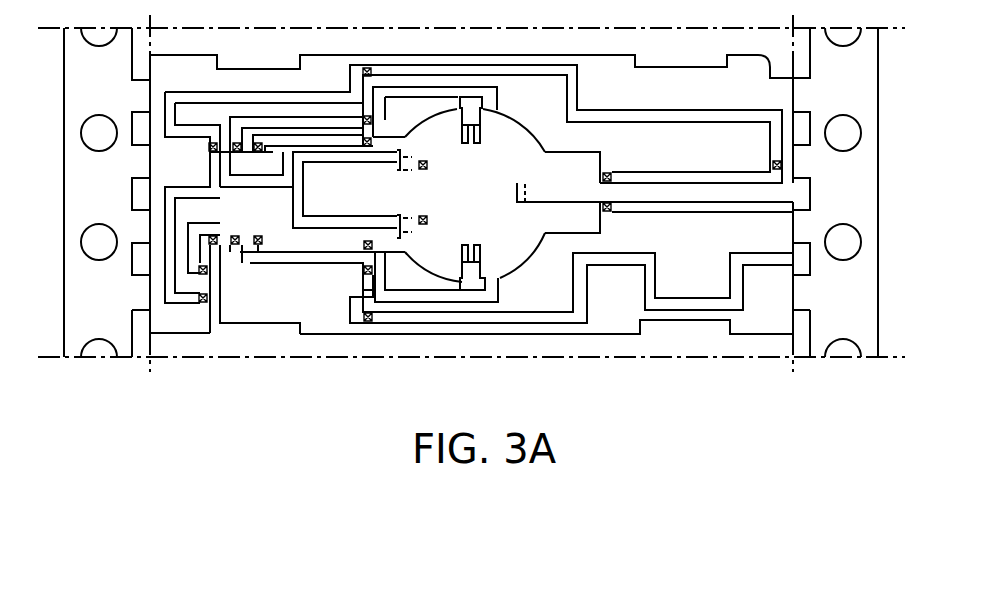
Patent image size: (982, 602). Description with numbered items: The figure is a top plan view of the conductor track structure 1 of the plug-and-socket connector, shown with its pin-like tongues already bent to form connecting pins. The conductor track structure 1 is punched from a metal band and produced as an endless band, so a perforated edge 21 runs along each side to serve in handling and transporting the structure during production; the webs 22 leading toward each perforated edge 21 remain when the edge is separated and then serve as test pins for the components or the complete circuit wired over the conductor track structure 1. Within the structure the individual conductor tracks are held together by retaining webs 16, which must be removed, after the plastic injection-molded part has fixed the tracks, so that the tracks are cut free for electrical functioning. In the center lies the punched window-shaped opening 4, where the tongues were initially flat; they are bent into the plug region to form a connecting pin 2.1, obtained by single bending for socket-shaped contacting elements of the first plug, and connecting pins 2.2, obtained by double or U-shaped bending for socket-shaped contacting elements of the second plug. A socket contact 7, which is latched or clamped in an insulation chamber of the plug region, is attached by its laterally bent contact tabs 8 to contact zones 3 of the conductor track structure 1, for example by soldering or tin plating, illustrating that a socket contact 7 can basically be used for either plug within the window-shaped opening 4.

The conductor track structure 1 is at (311, 372).
The connecting pin 2.1 is at (515, 190).
The connecting pin 2.2 is at (428, 220).
The contact zone 3 is at (455, 100).
The window-shaped opening 4 is at (503, 164).
The socket contact 7 is at (485, 133).
The contact tab 8 is at (468, 100).
The retaining web 16 is at (363, 243).
The perforated edge 21 is at (80, 345).
The web 22 is at (150, 292).